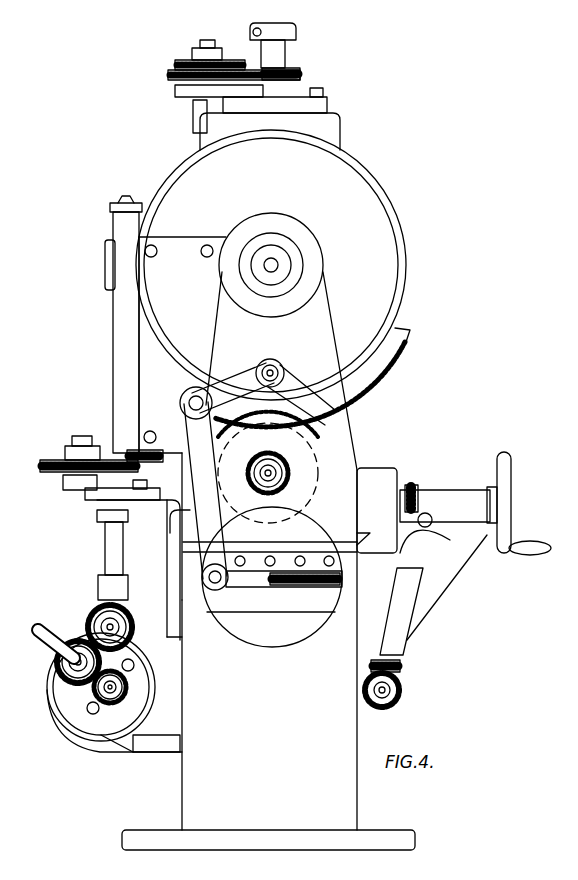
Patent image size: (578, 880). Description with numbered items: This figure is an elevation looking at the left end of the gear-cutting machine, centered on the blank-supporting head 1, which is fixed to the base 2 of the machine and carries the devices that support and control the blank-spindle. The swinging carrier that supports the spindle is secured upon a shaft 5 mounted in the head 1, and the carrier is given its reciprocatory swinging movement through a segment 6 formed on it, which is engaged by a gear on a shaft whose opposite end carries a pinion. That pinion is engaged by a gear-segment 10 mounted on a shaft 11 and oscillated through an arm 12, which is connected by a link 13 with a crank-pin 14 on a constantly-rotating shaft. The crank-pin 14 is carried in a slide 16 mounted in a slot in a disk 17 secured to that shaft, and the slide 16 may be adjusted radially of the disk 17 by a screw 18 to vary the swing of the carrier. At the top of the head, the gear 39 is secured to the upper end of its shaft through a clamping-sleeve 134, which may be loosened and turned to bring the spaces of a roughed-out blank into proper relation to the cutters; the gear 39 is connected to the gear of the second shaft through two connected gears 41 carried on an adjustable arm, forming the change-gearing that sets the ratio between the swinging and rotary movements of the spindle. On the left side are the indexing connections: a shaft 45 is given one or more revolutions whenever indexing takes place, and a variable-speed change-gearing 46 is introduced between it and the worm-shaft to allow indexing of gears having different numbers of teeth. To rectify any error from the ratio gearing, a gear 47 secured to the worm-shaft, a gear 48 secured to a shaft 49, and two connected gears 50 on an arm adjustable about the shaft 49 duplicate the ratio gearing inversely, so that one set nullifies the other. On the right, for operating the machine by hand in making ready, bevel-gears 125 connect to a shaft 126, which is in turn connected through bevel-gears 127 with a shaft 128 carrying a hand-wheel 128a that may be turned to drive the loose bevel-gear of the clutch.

The blank-supporting head 1 is at (345, 452).
The base 2 is at (352, 735).
The shaft 5 is at (282, 265).
The segment 6 is at (410, 345).
The gear-segment 10 is at (290, 468).
The shaft 11 is at (282, 368).
The arm 12 is at (228, 382).
The link 13 is at (205, 490).
The crank-pin 14 is at (212, 588).
The slide 16 is at (248, 575).
The disk 17 is at (258, 632).
The screw 18 is at (296, 578).
The gear 39 is at (301, 74).
The connected gears 41 is at (175, 70).
The shaft 45 is at (114, 698).
The change-gearing 46 is at (97, 678).
The gear 47 is at (154, 446).
The gear 48 is at (113, 468).
The shaft 49 is at (108, 545).
The connected gears 50 is at (55, 462).
The bevel-gears 125 is at (400, 690).
The shaft 126 is at (398, 668).
The bevel-gears 127 is at (420, 514).
The shaft 128 is at (408, 486).
The hand-wheel 128a is at (505, 510).
The clamping-sleeve 134 is at (280, 52).